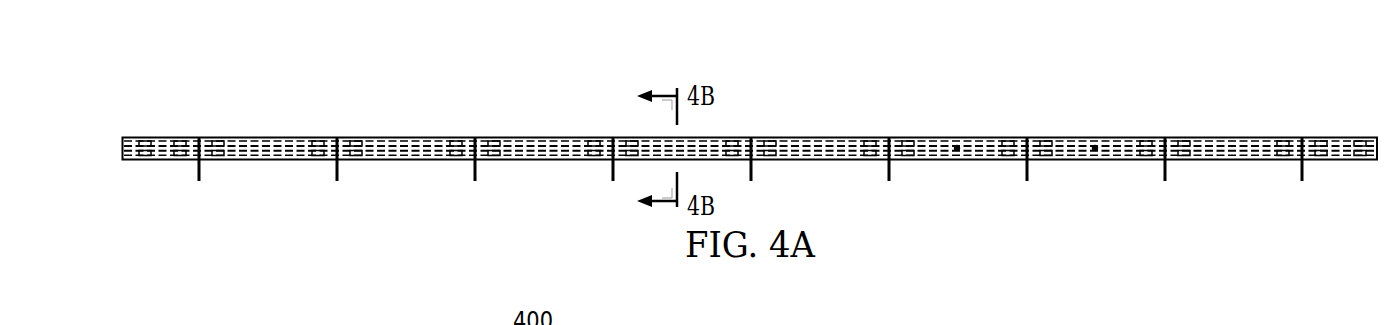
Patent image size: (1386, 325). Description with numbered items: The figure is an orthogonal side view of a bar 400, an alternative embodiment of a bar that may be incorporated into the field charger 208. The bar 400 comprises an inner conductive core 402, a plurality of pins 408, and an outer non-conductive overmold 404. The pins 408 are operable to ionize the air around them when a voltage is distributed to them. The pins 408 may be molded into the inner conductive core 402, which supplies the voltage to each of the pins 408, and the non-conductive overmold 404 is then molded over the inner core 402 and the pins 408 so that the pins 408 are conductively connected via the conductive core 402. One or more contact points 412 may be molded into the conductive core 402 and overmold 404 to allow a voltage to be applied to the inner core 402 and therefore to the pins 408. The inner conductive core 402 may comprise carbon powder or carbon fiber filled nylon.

The field charger 208 is at (1212, 102).
The bar 400 is at (822, 134).
The inner conductive core 402 is at (255, 137).
The outer non-conductive overmold 404 is at (392, 137).
The pins 408 is at (198, 179).
The contact points 412 is at (957, 145).